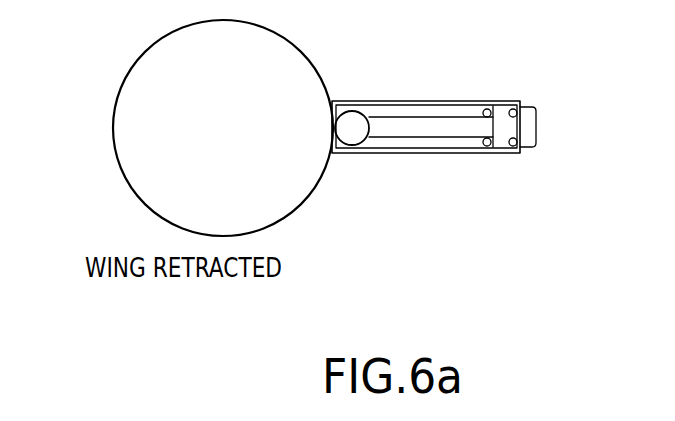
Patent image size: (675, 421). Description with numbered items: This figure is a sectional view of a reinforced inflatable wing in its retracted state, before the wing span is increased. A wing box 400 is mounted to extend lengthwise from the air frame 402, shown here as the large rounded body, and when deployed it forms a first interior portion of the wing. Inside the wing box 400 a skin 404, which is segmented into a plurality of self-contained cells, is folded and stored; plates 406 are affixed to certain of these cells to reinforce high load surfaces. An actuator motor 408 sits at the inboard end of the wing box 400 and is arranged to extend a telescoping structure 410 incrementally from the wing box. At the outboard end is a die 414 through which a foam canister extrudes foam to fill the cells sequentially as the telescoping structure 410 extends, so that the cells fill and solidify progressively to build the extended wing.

The wing box 400 is at (360, 100).
The air frame 402 is at (120, 93).
The skin 404 is at (467, 106).
The plates 406 is at (500, 127).
The actuator motor 408 is at (350, 110).
The telescoping structure 410 is at (403, 106).
The die 414 is at (503, 130).